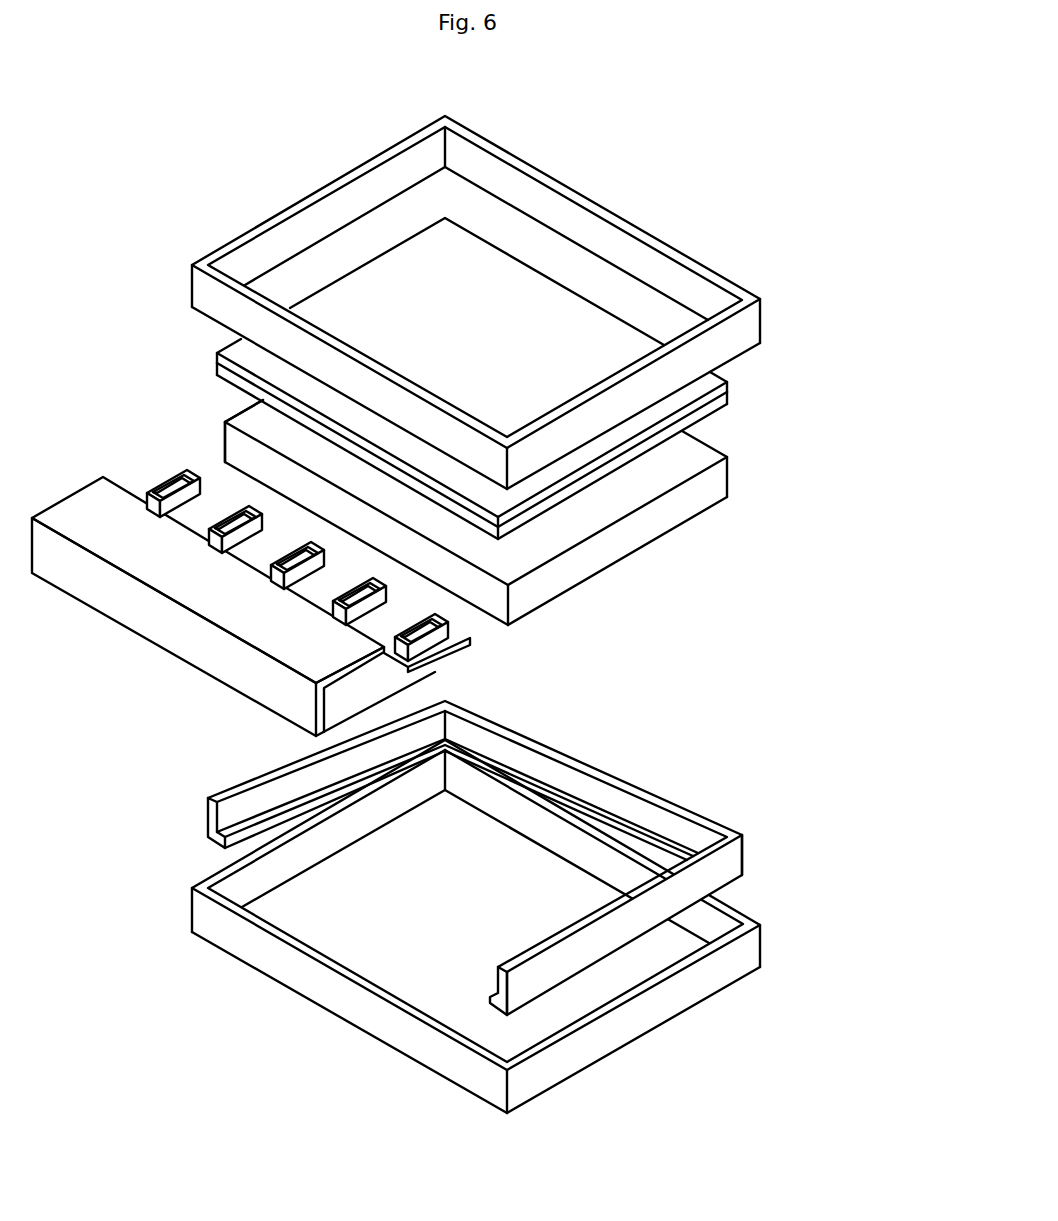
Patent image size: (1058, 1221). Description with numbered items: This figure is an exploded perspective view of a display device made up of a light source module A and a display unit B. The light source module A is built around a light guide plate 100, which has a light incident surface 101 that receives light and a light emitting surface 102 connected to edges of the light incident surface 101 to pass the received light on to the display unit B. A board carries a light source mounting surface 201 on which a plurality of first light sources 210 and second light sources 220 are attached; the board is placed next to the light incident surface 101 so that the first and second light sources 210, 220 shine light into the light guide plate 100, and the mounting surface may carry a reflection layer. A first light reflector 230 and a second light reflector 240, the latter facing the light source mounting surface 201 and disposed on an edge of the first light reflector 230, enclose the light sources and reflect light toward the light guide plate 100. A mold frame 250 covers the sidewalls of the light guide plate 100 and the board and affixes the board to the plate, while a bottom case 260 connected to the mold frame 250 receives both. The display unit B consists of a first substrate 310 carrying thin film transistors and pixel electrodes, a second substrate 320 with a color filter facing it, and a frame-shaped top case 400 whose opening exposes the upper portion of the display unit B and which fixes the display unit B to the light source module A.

The light guide plate 100 is at (492, 498).
The light incident surface 101 is at (230, 440).
The light emitting surface 102 is at (252, 418).
The light source mounting surface 201 is at (362, 564).
The first light sources 210 is at (247, 501).
The second light sources 220 is at (458, 647).
The first light reflector 230 is at (183, 642).
The second light reflector 240 is at (90, 494).
The mold frame 250 is at (762, 852).
The bottom case 260 is at (778, 945).
The first substrate 310 is at (728, 398).
The second substrate 320 is at (728, 387).
The top case 400 is at (788, 313).
The light source module A is at (473, 772).
The display unit B is at (541, 439).